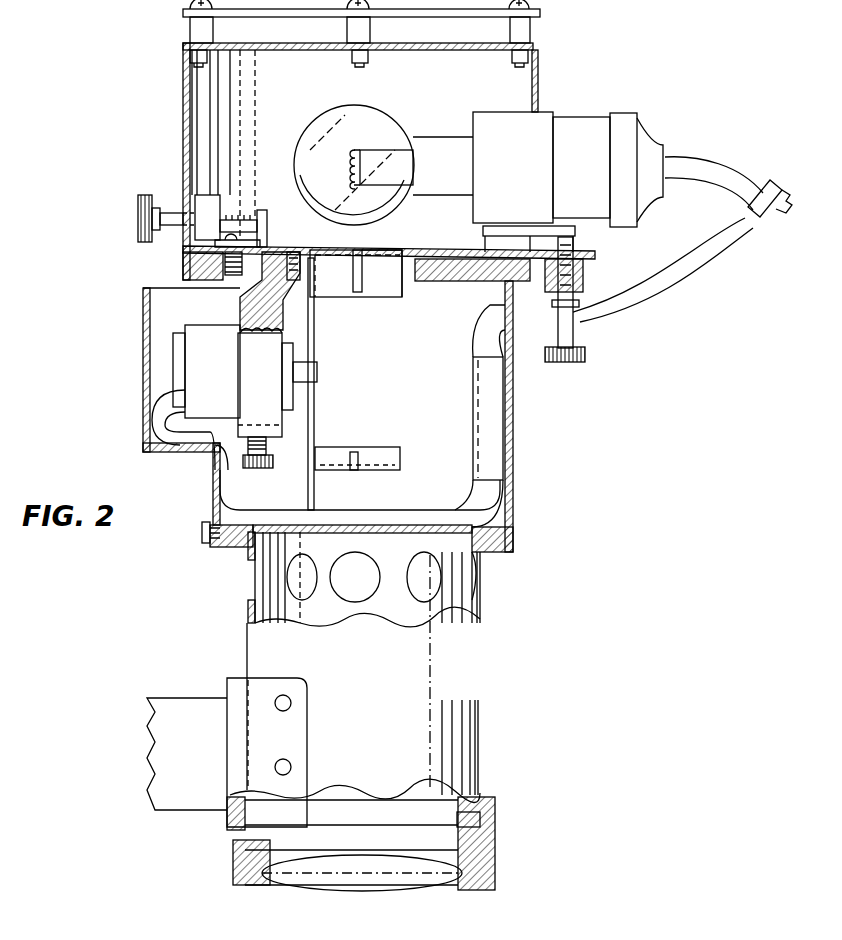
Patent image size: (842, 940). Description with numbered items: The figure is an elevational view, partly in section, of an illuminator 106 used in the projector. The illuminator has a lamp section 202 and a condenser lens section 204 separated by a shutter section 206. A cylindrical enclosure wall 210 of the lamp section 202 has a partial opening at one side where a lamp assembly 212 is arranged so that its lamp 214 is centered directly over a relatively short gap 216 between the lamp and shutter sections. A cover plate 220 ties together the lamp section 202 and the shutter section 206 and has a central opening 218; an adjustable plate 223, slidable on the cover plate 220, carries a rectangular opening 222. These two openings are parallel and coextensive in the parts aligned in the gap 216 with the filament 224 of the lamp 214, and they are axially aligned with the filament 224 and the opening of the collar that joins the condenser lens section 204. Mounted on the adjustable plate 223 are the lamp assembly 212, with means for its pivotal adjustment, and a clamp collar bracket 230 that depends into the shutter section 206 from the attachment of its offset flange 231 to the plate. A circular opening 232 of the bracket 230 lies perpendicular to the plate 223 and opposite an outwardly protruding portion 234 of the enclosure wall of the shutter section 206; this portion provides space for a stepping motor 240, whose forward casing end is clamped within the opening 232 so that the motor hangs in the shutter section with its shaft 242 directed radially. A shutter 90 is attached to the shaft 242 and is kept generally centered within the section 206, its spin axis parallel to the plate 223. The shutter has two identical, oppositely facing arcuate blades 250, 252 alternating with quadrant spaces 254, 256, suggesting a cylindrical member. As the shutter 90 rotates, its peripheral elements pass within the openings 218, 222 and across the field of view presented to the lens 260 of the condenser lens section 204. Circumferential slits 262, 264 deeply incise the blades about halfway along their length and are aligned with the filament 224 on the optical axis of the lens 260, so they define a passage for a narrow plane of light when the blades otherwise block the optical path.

The shutter 90 is at (314, 410).
The illuminator 106 is at (128, 207).
The lamp section 202 is at (540, 83).
The condenser lens section 204 is at (440, 692).
The shutter section 206 is at (513, 473).
The cylindrical enclosure wall 210 is at (183, 143).
The lamp assembly 212 is at (628, 135).
The lamp 214 is at (392, 120).
The gap 216 is at (355, 242).
The central opening 218 is at (412, 284).
The cover plate 220 is at (503, 255).
The rectangular opening 222 is at (402, 255).
The adjustable plate 223 is at (450, 250).
The filament 224 is at (345, 170).
The clamp collar bracket 230 is at (270, 450).
The offset flange 231 is at (283, 330).
The circular opening 232 is at (245, 335).
The outwardly protruding portion 234 is at (143, 352).
The stepping motor 240 is at (226, 374).
The shaft 242 is at (298, 372).
The arcuate blade 250 is at (388, 285).
The arcuate blade 252 is at (395, 466).
The quadrant space 254 is at (383, 440).
The quadrant space 256 is at (385, 322).
The lens 260 is at (377, 878).
The circumferential slit 262 is at (358, 298).
The circumferential slit 264 is at (356, 453).